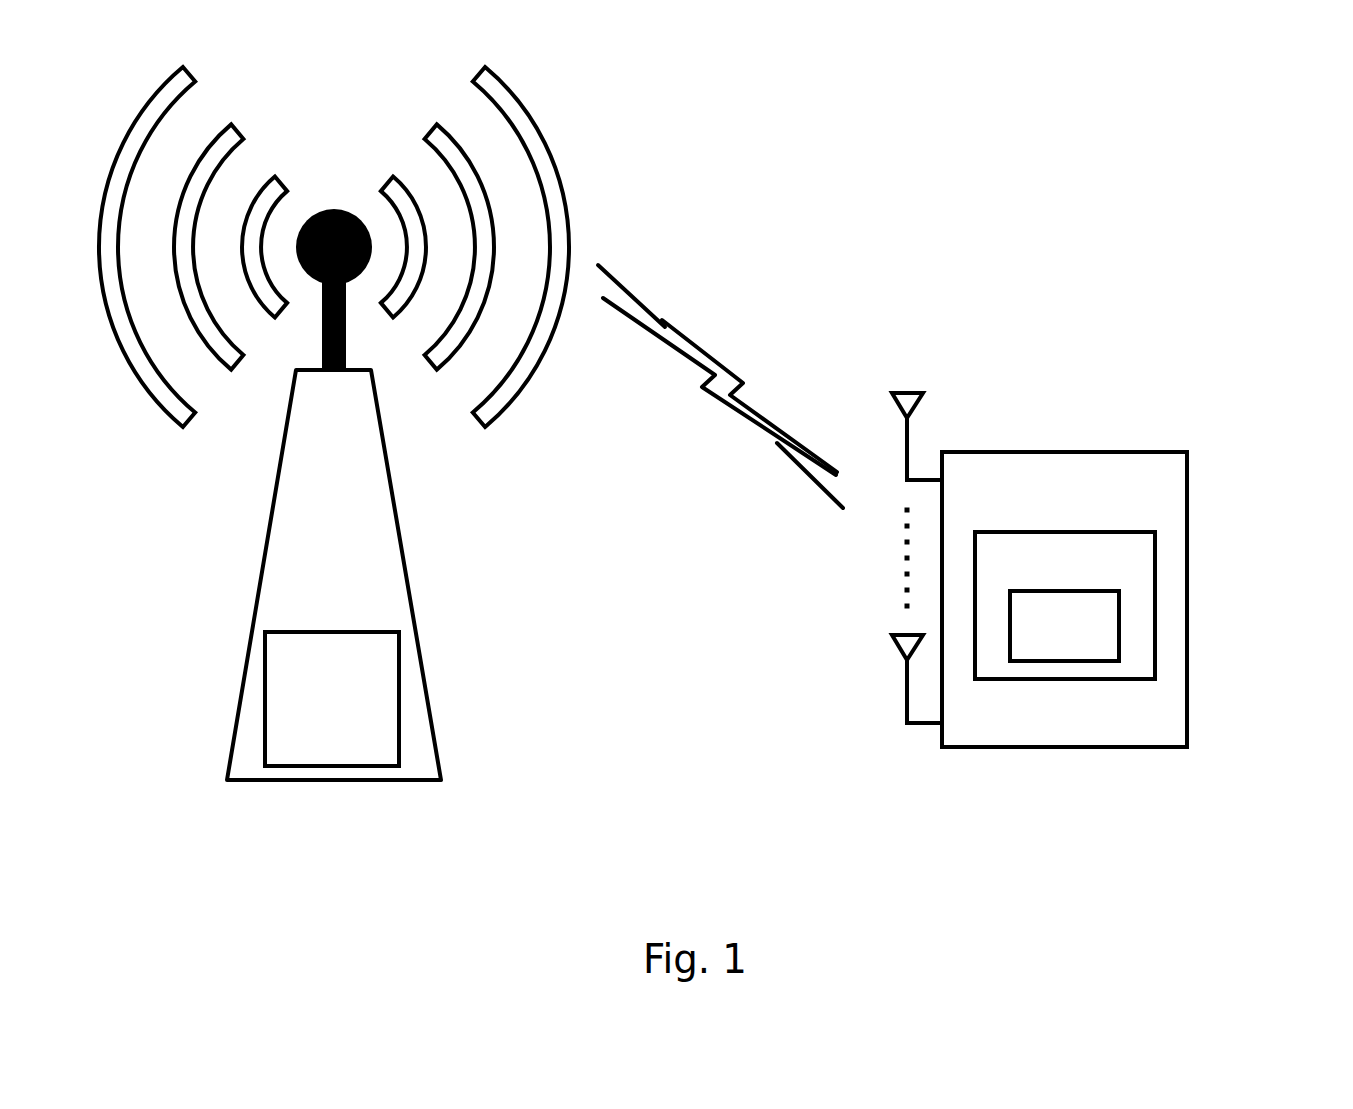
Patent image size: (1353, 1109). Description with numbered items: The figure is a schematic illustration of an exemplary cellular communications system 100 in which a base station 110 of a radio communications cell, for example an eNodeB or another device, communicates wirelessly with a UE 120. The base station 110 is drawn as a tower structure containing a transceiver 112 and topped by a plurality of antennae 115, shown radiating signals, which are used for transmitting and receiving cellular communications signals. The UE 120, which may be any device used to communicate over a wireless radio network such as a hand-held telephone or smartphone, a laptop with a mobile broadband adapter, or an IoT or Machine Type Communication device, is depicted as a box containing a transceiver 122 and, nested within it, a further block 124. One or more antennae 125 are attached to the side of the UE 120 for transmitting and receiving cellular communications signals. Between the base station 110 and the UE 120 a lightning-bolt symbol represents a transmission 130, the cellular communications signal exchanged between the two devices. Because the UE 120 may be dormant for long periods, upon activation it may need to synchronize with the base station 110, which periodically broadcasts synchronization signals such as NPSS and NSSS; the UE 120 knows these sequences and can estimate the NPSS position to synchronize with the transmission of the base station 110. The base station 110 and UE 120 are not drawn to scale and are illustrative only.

The cellular communications system 100 is at (863, 149).
The base station 110 is at (334, 423).
The transceiver 112 is at (310, 680).
The antennae 115 is at (330, 208).
The UE 120 is at (1051, 559).
The transceiver 122 is at (1042, 575).
The memory/module 124 is at (1042, 640).
The antennae 125 is at (903, 432).
The transmission 130 is at (716, 333).